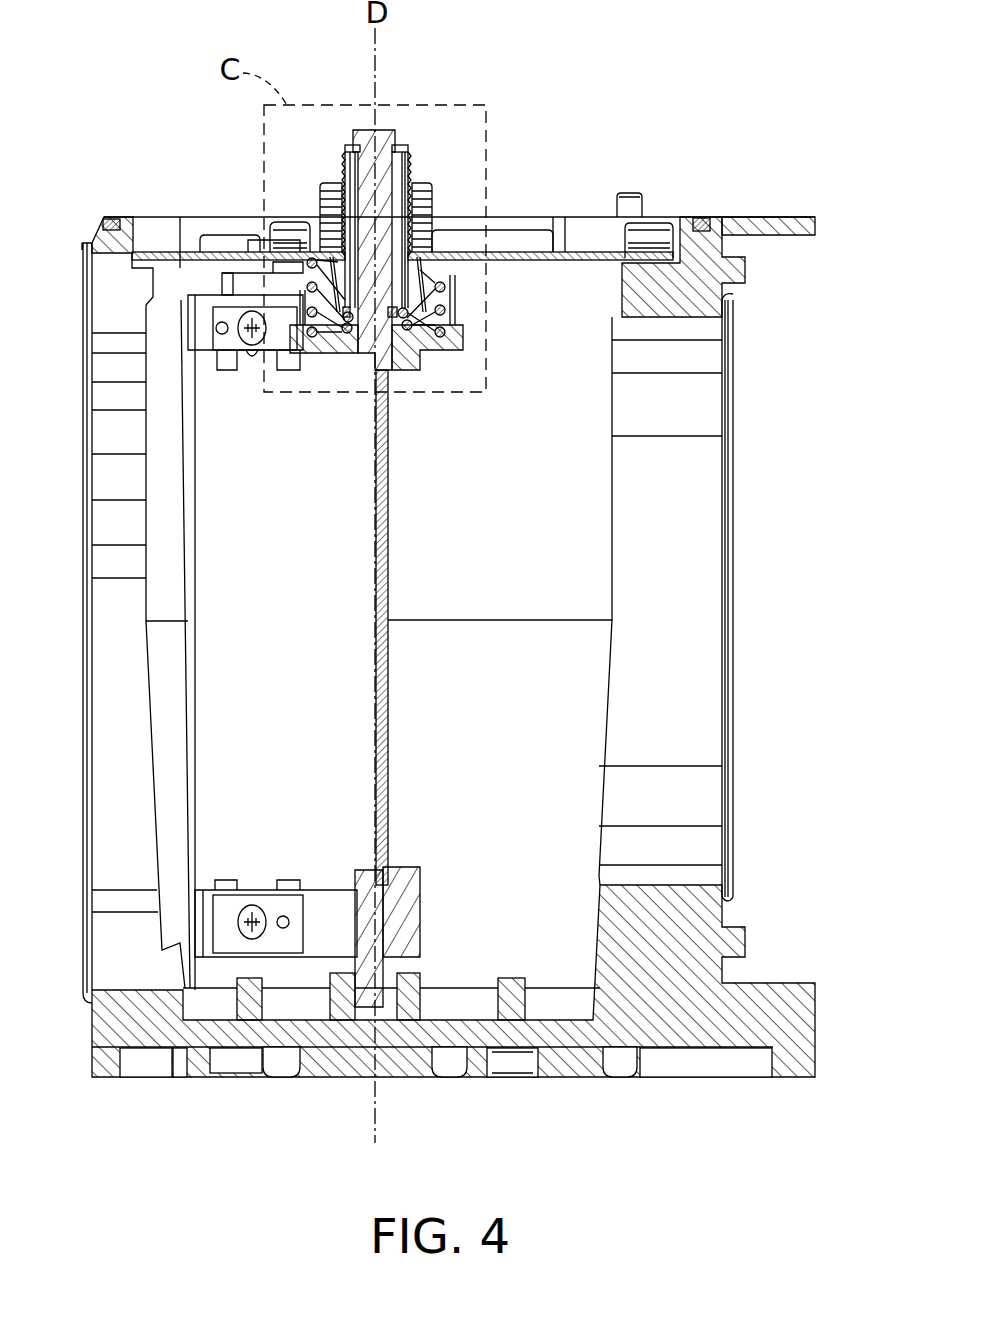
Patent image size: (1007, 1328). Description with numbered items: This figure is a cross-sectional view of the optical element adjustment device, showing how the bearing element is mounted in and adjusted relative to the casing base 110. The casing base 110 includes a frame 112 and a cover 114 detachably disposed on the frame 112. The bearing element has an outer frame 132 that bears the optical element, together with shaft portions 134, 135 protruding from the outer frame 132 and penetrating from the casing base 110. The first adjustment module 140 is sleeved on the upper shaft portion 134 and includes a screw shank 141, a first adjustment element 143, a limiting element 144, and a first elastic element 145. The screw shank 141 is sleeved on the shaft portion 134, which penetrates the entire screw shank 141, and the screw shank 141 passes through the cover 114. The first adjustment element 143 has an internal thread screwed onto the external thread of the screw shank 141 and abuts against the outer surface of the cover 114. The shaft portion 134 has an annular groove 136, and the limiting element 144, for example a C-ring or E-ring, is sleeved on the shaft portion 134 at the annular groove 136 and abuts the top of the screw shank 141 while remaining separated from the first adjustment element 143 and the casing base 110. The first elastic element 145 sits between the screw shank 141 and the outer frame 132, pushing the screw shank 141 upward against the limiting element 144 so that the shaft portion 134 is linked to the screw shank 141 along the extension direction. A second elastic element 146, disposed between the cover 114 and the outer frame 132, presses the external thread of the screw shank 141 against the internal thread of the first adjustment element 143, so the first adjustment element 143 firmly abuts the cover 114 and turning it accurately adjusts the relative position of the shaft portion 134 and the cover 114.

The casing base 110 is at (708, 103).
The frame 112 is at (682, 240).
The cover 114 is at (596, 252).
The outer frame 132 is at (388, 516).
The shaft portion 134 is at (388, 133).
The shaft portion 135 is at (407, 1010).
The annular groove 136 is at (361, 140).
The first adjustment module 140 is at (312, 92).
The screw shank 141 is at (409, 148).
The first adjustment element 143 is at (426, 206).
The limiting element 144 is at (408, 147).
The first elastic element 145 is at (412, 317).
The second elastic element 146 is at (446, 288).